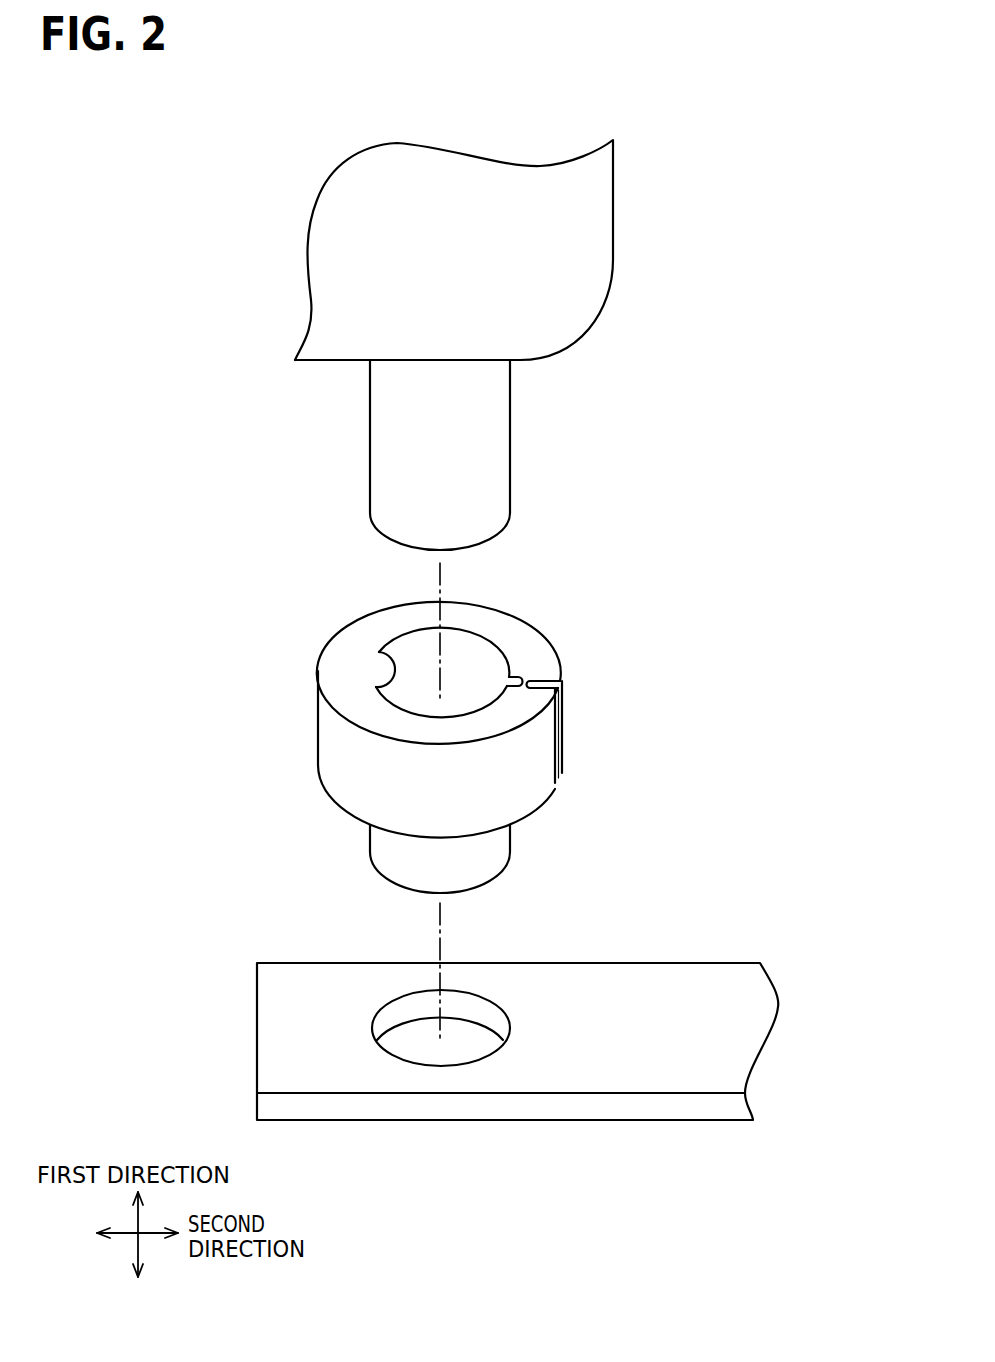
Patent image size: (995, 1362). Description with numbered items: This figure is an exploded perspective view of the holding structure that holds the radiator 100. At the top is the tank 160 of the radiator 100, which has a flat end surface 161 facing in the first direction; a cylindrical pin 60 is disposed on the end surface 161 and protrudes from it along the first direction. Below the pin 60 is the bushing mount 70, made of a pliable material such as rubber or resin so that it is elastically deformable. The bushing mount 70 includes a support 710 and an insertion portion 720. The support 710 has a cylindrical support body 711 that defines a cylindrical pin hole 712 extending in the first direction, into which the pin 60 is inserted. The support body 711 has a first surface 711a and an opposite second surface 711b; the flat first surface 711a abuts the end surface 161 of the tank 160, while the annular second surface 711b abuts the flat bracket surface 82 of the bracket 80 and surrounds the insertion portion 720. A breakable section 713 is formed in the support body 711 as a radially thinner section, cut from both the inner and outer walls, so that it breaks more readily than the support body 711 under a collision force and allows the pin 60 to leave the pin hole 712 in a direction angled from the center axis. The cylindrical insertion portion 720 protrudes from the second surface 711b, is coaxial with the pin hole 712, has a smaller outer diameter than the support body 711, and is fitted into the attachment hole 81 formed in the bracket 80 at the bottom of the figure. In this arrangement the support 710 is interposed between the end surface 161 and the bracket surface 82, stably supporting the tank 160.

The radiator 100 is at (491, 335).
The tank 160 is at (580, 273).
The end surface 161 is at (330, 362).
The pin 60 is at (499, 497).
The bushing mount 70 is at (447, 731).
The support 710 is at (447, 708).
The support body 711 is at (532, 762).
The first surface 711a is at (522, 593).
The second surface 711b is at (350, 818).
The pin hole 712 is at (379, 652).
The breakable section 713 is at (529, 681).
The insertion portion 720 is at (513, 838).
The bracket 80 is at (517, 1007).
The attachment hole 81 is at (500, 1015).
The bracket surface 82 is at (345, 1018).